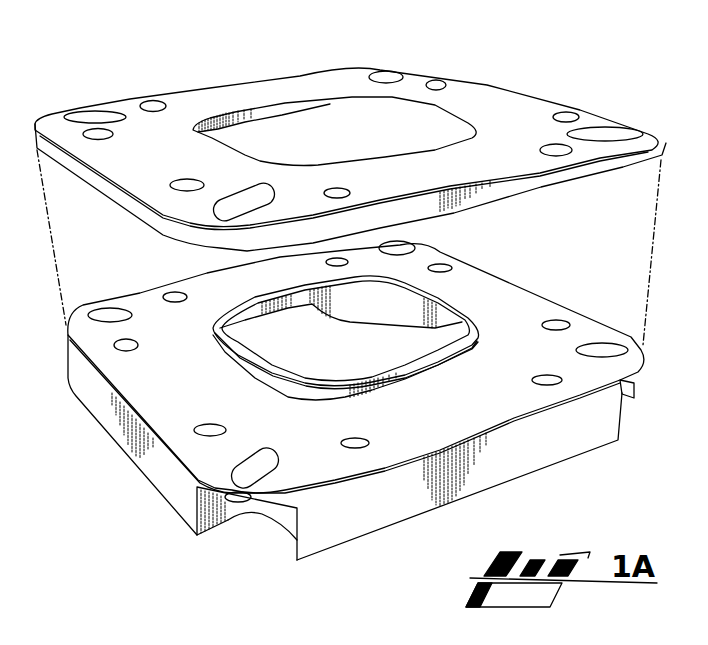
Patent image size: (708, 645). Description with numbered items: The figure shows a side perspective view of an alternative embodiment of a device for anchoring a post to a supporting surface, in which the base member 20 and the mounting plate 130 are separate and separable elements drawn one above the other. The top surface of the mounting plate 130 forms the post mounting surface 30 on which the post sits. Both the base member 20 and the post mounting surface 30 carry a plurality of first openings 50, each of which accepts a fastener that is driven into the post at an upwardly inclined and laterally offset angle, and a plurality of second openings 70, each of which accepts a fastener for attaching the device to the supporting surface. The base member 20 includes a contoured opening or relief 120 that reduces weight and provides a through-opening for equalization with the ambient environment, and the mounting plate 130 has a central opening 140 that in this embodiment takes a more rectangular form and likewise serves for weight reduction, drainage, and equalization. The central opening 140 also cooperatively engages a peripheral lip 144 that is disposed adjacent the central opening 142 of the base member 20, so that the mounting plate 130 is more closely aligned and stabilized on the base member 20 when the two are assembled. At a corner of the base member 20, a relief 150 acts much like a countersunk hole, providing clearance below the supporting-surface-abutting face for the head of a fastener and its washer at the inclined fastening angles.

The base member 20 is at (372, 517).
The post mounting surface 30 is at (474, 100).
The first opening 50 is at (607, 134).
The second opening 70 is at (330, 187).
The opening or relief 120 is at (244, 319).
The mounting plate 130 is at (547, 182).
The central opening 140 is at (282, 115).
The central opening 142 is at (425, 312).
The peripheral lip 144 is at (455, 356).
The relief 150 is at (248, 510).